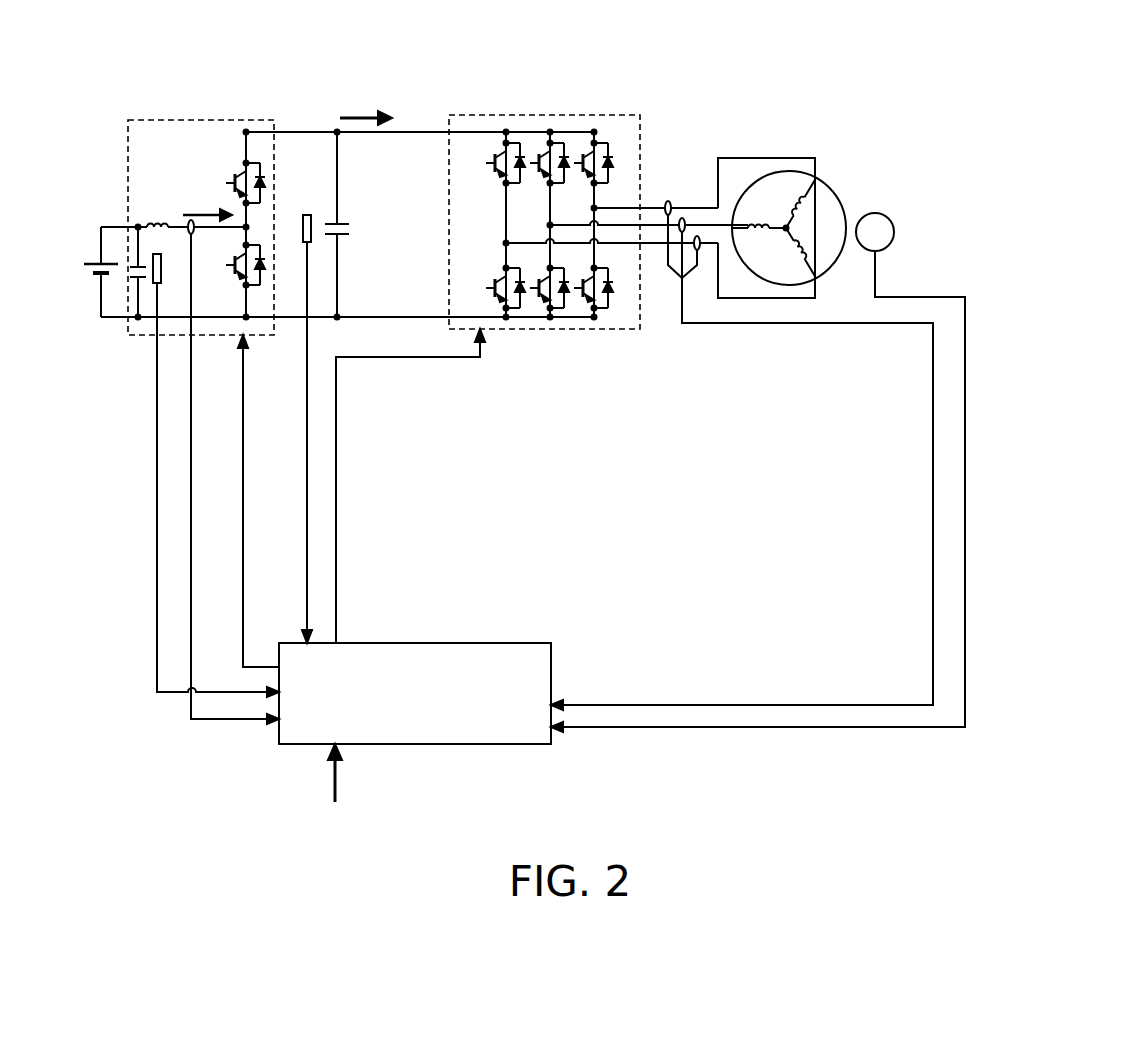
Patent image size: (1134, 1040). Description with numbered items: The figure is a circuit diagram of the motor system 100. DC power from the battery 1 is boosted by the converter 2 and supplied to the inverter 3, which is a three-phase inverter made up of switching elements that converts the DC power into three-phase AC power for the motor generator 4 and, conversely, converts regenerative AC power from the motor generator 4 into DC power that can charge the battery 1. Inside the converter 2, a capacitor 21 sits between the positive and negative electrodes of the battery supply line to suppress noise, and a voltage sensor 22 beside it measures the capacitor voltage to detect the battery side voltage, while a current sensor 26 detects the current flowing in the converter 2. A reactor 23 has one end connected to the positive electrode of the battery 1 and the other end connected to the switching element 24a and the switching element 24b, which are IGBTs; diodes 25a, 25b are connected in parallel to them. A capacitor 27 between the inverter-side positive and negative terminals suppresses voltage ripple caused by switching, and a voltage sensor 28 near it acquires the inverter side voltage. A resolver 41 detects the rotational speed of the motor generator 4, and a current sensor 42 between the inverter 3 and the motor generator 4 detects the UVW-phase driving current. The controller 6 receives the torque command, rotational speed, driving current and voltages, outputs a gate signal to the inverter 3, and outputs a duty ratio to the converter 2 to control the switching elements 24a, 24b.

The motor system 100 is at (968, 57).
The battery 1 is at (102, 264).
The converter 2 is at (127, 152).
The capacitor 21 is at (134, 277).
The voltage sensor 22 is at (155, 284).
The reactor 23 is at (158, 223).
The switching element 24a is at (231, 179).
The switching element 24b is at (232, 270).
The diode 25a is at (262, 177).
The diode 25b is at (268, 278).
The current sensor 26 is at (191, 219).
The capacitor 27 is at (343, 222).
The voltage sensor 28 is at (308, 245).
The inverter 3 is at (642, 140).
The motor generator 4 is at (822, 180).
The resolver 41 is at (875, 213).
The current sensor 42 is at (690, 205).
The controller 6 is at (493, 642).